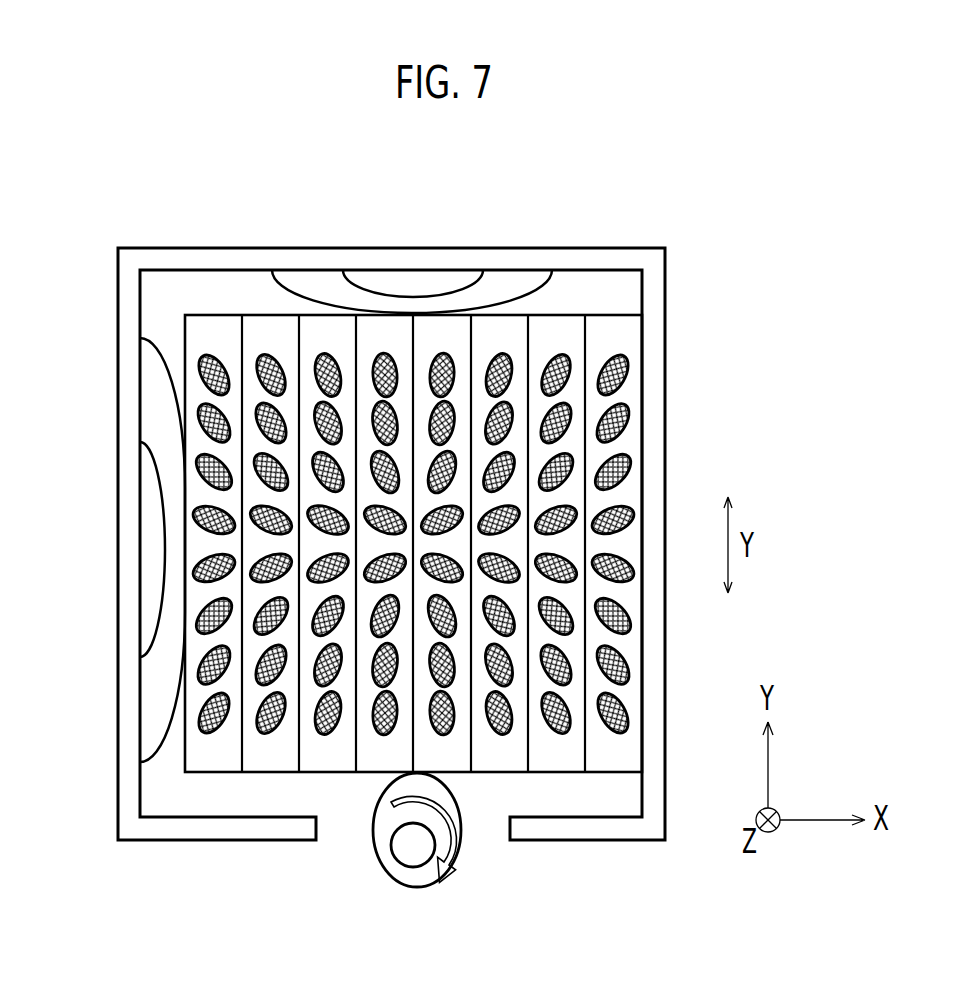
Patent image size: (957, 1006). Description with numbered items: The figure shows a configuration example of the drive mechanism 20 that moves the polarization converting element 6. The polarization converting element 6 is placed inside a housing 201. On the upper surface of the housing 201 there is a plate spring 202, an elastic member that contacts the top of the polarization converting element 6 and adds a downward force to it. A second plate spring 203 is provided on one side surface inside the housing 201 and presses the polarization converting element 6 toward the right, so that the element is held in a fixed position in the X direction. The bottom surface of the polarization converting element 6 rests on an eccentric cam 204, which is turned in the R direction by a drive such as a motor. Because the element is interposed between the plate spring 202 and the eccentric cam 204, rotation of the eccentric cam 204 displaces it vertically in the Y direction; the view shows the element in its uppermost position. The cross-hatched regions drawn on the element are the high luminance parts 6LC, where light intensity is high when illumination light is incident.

The drive mechanism 20 is at (410, 590).
The housing 201 is at (665, 320).
The plate spring 202 is at (308, 285).
The plate spring 203 is at (150, 400).
The eccentric cam 204 is at (378, 873).
The polarization converting element 6 is at (600, 315).
The high luminance parts 6LC is at (627, 410).